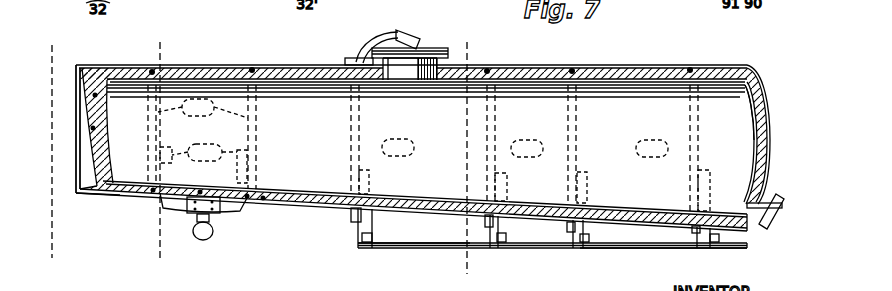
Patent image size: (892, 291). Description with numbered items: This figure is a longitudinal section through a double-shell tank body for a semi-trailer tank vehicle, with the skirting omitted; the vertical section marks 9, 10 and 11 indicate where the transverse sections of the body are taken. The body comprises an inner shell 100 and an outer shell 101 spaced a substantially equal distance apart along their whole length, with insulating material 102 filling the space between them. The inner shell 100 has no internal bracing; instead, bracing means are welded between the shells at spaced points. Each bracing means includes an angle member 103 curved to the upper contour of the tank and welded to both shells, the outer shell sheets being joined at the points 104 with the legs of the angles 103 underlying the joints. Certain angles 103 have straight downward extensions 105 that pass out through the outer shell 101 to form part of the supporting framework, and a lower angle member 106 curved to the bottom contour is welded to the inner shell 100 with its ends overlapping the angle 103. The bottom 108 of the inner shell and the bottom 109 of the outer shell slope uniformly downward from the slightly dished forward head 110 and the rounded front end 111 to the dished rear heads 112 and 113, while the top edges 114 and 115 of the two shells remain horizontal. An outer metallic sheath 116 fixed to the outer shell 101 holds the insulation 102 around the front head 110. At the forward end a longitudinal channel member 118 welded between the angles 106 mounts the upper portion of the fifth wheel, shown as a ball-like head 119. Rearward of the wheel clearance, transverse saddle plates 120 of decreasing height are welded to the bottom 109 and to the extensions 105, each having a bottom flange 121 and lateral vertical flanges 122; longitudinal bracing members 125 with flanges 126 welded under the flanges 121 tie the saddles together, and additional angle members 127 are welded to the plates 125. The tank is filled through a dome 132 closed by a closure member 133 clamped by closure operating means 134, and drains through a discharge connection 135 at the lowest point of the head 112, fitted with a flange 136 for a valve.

The section line 9- 9 is at (72, 46).
The section line 10- 10 is at (467, 43).
The section line 11- 11 is at (160, 45).
The inner shell 100 is at (522, 84).
The outer shell 101 is at (284, 65).
The insulating material 102 is at (89, 69).
The angle member 103 is at (150, 83).
The joints 104 is at (154, 70).
The downward extensions 105 is at (355, 216).
The angle member 106 is at (165, 200).
The bottom of the inner shell 108 is at (430, 200).
The bottom of the outer shell 109 is at (438, 213).
The forward head 110 is at (105, 139).
The rounded front end 111 is at (80, 166).
The rear head 112 is at (755, 144).
The rear head 113 is at (768, 126).
The top edge 114 is at (685, 97).
The top edge 115 is at (585, 66).
The outer metallic sheath 116 is at (88, 134).
The channel member 118 is at (233, 219).
The ball-like head 119 is at (211, 239).
The saddle plates 120 is at (358, 240).
The bottom flange 121 is at (366, 250).
The lateral vertical flanges 122 is at (371, 237).
The longitudinally extending bracing means 125 is at (448, 249).
The flanges 126 is at (412, 249).
The angle members 127 is at (628, 249).
The dome 132 is at (414, 80).
The closure member 133 is at (419, 34).
The closure operating means 134 is at (376, 40).
The discharge connection 135 is at (770, 200).
The flange 136 is at (779, 217).